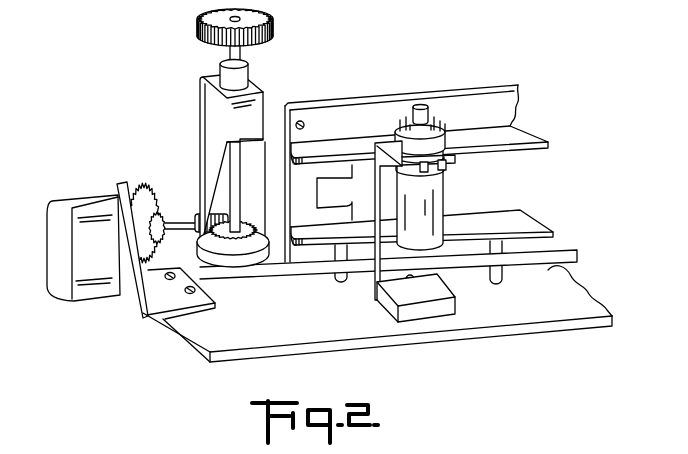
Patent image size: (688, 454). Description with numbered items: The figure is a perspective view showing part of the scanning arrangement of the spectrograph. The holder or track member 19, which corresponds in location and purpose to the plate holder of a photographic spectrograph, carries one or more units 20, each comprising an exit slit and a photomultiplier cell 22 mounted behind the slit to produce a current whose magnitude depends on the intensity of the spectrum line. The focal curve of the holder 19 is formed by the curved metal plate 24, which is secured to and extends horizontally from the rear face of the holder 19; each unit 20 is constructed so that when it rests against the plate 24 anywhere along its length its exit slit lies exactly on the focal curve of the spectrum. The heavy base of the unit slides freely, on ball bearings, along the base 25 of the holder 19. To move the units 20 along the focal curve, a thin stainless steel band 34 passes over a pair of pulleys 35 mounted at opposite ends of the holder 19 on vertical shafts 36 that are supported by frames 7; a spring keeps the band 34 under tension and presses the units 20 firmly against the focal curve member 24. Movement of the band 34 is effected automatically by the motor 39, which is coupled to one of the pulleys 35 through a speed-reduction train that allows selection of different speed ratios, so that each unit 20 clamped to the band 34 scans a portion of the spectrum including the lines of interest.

The frame 7 is at (207, 123).
The holder or track member 19 is at (287, 335).
The unit 20 is at (383, 300).
The photomultiplier cell 22 is at (430, 196).
The focal curve plate 24 is at (530, 223).
The base of the holder 25 is at (571, 312).
The band 34 is at (578, 262).
The pulley 35 is at (245, 256).
The vertical shaft 36 is at (236, 187).
The motor 39 is at (84, 181).